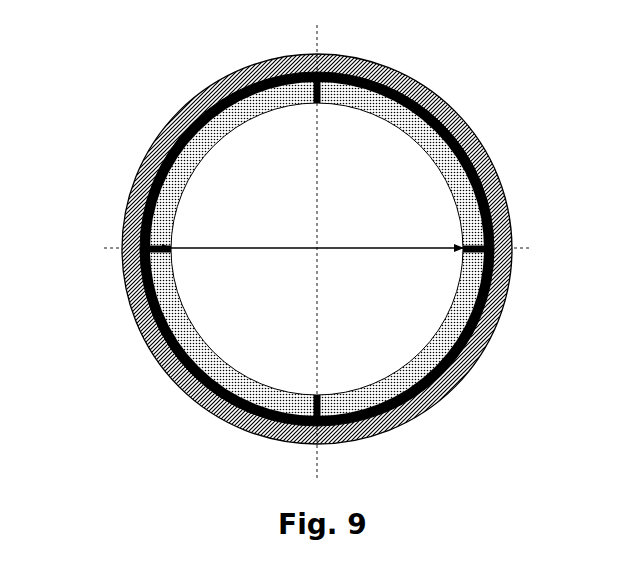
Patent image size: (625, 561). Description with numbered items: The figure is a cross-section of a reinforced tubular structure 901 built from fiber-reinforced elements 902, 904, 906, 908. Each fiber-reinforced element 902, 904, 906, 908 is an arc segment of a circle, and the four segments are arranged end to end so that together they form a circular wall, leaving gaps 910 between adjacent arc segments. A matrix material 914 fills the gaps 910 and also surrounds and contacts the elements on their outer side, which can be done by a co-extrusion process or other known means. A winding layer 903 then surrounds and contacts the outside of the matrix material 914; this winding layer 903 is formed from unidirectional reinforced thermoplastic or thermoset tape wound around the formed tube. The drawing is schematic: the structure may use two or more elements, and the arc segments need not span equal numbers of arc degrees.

The reinforced tubular structure 901 is at (297, 240).
The fiber-reinforced element 902 is at (422, 103).
The winding layer 903 is at (480, 154).
The fiber-reinforced element 904 is at (157, 180).
The fiber-reinforced element 906 is at (177, 335).
The fiber-reinforced element 908 is at (427, 372).
The gaps 910 is at (312, 86).
The matrix material 914 is at (177, 120).